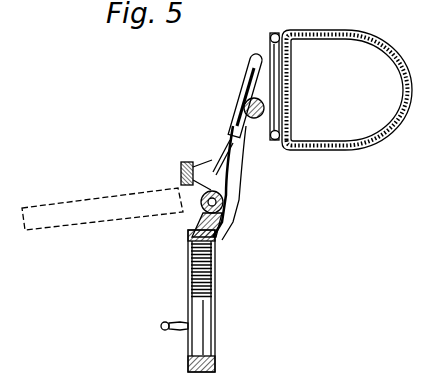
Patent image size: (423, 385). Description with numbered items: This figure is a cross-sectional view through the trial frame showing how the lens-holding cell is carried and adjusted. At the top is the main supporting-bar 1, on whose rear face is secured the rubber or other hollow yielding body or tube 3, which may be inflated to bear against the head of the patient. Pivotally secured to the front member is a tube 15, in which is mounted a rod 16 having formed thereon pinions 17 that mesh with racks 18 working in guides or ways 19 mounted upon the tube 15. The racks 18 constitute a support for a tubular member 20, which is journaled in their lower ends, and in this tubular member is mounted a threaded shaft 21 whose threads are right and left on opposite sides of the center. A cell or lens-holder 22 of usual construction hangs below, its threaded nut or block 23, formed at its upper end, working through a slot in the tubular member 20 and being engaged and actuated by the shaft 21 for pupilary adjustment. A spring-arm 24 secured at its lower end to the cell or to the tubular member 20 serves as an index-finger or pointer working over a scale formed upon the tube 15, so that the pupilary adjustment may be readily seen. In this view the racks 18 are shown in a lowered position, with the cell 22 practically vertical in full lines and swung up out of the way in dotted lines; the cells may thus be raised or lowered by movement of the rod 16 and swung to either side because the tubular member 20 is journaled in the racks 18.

The main supporting-bar 1 is at (277, 34).
The hollow yielding body or tube 3 is at (347, 90).
The tube 15 is at (266, 107).
The rod 16 is at (244, 108).
The pinions 17 is at (271, 134).
The racks 18 is at (220, 157).
The guides or ways 19 is at (252, 62).
The tubular member 20 is at (201, 209).
The threaded shaft 21 is at (226, 200).
The cells or lens-holders 22 is at (215, 302).
The threaded nuts or blocks 23 is at (224, 226).
The spring-arms 24 is at (246, 172).